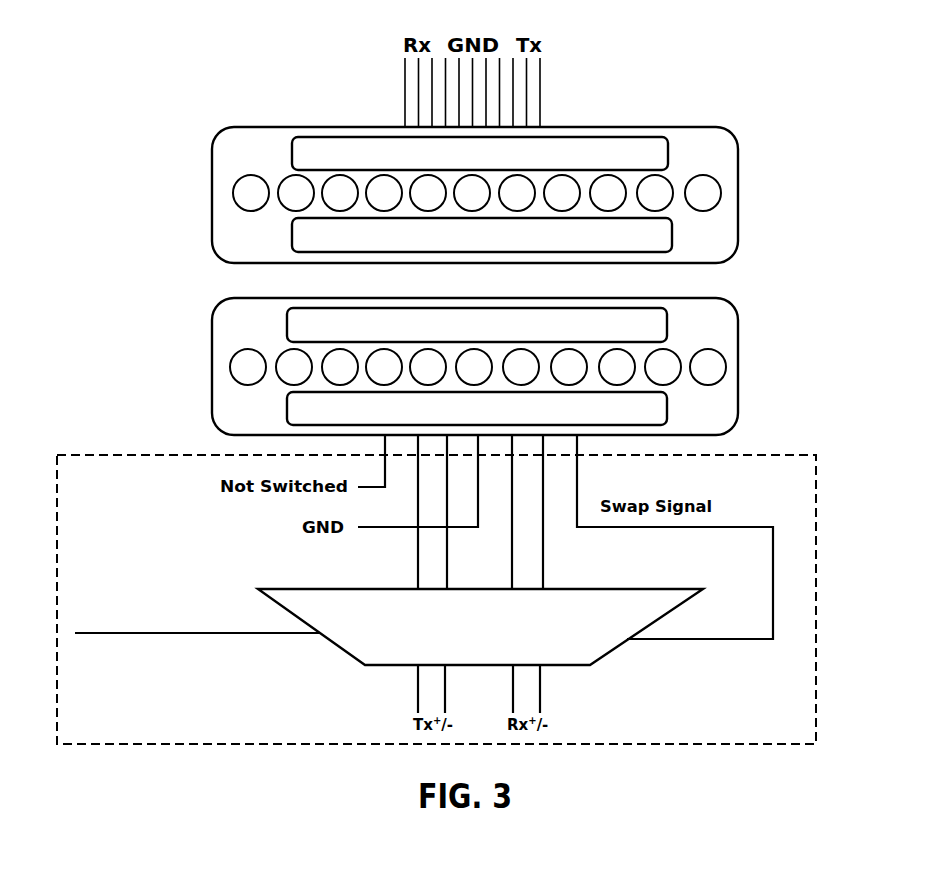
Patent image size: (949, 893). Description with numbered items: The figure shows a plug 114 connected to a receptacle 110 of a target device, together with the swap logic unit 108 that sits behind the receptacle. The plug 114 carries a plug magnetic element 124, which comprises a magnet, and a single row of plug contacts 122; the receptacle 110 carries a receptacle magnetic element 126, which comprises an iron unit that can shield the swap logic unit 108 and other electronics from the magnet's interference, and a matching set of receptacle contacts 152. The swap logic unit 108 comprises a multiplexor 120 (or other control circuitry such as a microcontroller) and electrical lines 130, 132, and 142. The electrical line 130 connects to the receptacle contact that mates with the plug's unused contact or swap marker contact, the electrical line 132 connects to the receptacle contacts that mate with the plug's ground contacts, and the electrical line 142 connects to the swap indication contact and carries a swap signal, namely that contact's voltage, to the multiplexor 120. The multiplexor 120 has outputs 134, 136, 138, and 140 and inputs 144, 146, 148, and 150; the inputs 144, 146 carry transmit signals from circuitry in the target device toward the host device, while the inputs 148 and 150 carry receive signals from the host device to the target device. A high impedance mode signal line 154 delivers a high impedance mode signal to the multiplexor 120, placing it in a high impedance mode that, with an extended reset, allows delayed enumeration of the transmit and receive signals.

The swap logic unit 108 is at (817, 527).
The receptacle 110 is at (212, 360).
The plug 114 is at (212, 200).
The multiplexor 120 is at (258, 592).
The plug contacts 122 is at (721, 190).
The plug magnetic element 124 is at (668, 164).
The receptacle magnetic element 126 is at (668, 318).
The electrical line 130 is at (358, 488).
The electrical line 132 is at (358, 528).
The output 134 is at (418, 563).
The output 136 is at (447, 580).
The output 138 is at (512, 520).
The output 140 is at (543, 548).
The electrical line 142 is at (717, 527).
The input 144 is at (418, 687).
The input 146 is at (445, 692).
The input 148 is at (513, 690).
The input 150 is at (541, 686).
The receptacle contacts 152 is at (726, 365).
The high impedance mode signal line 154 is at (238, 633).